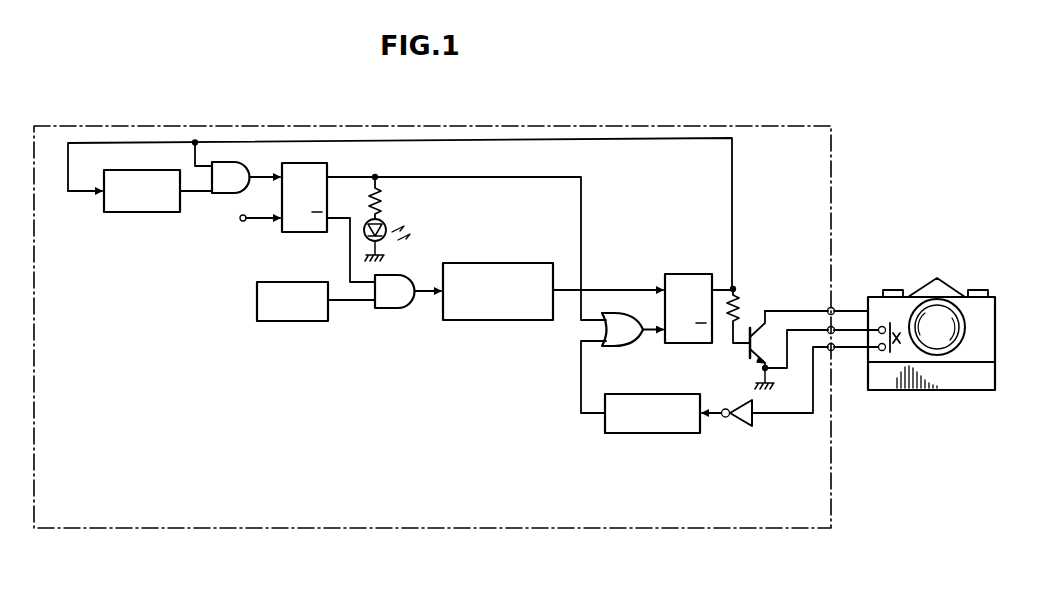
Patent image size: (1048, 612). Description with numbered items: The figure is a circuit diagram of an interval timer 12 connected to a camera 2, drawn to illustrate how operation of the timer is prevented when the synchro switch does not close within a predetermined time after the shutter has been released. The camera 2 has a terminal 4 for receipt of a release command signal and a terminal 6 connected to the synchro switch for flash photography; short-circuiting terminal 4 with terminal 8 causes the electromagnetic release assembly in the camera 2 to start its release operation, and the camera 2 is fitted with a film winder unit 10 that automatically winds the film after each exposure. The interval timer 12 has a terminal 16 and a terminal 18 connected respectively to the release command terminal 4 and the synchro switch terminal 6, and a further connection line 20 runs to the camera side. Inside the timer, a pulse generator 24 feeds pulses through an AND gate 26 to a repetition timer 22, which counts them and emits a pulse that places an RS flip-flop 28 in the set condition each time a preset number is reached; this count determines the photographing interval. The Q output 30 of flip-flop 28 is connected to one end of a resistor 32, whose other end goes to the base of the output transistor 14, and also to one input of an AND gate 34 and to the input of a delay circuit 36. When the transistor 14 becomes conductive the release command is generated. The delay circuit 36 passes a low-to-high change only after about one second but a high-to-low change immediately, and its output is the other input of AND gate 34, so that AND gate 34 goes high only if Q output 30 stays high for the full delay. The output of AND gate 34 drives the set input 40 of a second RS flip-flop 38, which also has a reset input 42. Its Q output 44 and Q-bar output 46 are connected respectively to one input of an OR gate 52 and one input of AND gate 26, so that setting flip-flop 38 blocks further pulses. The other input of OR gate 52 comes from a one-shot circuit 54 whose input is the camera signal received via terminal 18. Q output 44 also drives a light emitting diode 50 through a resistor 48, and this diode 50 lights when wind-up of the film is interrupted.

The camera 2 is at (941, 354).
The terminal 4 is at (859, 310).
The terminal 6 is at (848, 347).
The terminal 8 is at (841, 310).
The film winder unit 10 is at (980, 392).
The interval timer 12 is at (606, 123).
The output transistor 14 is at (697, 325).
The terminal 16 is at (778, 310).
The terminal 18 is at (818, 395).
The line 20 is at (795, 330).
The repetition timer 22 is at (500, 322).
The pulse generator 24 is at (300, 322).
The AND gate 26 is at (395, 310).
The RS flip-flop 28 is at (688, 274).
The Q output 30 is at (713, 272).
The resistor 32 is at (743, 308).
The AND gate 34 is at (223, 195).
The delay circuit 36 is at (135, 213).
The RS flip-flop 38 is at (298, 233).
The set input 40 is at (266, 176).
The reset input 42 is at (262, 220).
The Q output 44 is at (364, 177).
The Q-bar output 46 is at (340, 222).
The resistor 48 is at (382, 206).
The light emitting diode 50 is at (388, 235).
The OR gate 52 is at (638, 343).
The one-shot circuit 54 is at (658, 434).